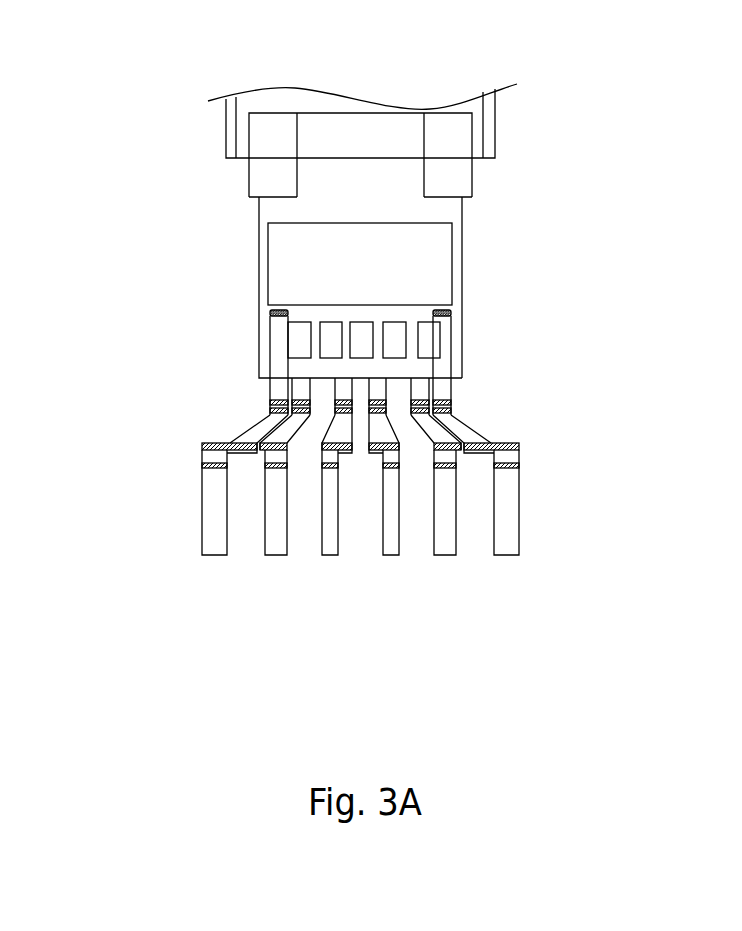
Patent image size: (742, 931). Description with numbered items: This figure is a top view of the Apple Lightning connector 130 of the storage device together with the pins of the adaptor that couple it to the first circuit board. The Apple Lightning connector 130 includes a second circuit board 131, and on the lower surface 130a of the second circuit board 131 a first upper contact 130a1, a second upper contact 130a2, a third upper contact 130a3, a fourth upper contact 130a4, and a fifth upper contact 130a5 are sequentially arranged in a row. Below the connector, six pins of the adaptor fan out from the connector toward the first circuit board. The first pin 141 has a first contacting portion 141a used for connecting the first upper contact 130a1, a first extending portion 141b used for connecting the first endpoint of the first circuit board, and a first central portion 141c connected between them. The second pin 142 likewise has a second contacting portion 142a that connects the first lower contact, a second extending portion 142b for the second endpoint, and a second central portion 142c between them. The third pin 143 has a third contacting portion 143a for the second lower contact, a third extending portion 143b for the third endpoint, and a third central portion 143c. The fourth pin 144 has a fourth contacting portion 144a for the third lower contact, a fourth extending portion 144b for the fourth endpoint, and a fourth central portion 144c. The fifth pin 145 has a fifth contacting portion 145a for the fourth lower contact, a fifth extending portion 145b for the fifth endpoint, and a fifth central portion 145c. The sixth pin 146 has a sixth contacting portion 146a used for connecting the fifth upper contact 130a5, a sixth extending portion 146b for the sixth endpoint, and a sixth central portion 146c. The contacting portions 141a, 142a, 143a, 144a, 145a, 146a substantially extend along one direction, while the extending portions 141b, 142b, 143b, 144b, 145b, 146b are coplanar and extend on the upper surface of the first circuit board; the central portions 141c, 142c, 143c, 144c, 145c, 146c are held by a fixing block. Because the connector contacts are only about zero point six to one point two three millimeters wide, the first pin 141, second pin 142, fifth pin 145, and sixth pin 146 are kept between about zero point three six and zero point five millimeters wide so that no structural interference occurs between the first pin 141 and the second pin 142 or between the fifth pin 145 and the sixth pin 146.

The Apple Lightning connector 130 is at (267, 101).
The lower surface 130a is at (268, 213).
The second circuit board 131 is at (462, 213).
The first upper contact 130a1 is at (297, 350).
The second upper contact 130a2 is at (330, 337).
The third upper contact 130a3 is at (358, 333).
The fourth upper contact 130a4 is at (392, 337).
The fifth upper contact 130a5 is at (424, 350).
The first pin 141 is at (174, 432).
The first contacting portion 141a is at (275, 390).
The first extending portion 141b is at (210, 483).
The first central portion 141c is at (232, 455).
The second pin 142 is at (212, 519).
The second contacting portion 142a is at (300, 398).
The second extending portion 142b is at (268, 548).
The second central portion 142c is at (270, 455).
The third pin 143 is at (266, 565).
The third contacting portion 143a is at (342, 395).
The third extending portion 143b is at (330, 547).
The third central portion 143c is at (325, 455).
The fourth pin 144 is at (455, 565).
The fourth contacting portion 144a is at (379, 395).
The fourth extending portion 144b is at (393, 576).
The fourth central portion 144c is at (396, 455).
The fifth pin 145 is at (510, 519).
The fifth contacting portion 145a is at (420, 398).
The fifth extending portion 145b is at (480, 548).
The fifth central portion 145c is at (450, 455).
The sixth pin 146 is at (547, 432).
The sixth contacting portion 146a is at (446, 390).
The sixth extending portion 146b is at (511, 483).
The sixth central portion 146c is at (489, 455).